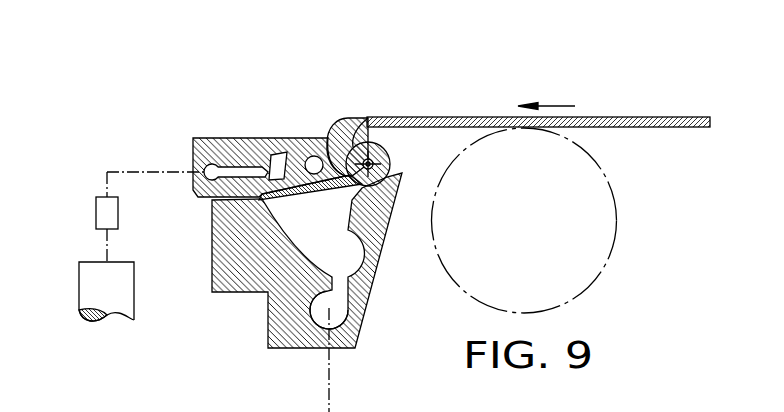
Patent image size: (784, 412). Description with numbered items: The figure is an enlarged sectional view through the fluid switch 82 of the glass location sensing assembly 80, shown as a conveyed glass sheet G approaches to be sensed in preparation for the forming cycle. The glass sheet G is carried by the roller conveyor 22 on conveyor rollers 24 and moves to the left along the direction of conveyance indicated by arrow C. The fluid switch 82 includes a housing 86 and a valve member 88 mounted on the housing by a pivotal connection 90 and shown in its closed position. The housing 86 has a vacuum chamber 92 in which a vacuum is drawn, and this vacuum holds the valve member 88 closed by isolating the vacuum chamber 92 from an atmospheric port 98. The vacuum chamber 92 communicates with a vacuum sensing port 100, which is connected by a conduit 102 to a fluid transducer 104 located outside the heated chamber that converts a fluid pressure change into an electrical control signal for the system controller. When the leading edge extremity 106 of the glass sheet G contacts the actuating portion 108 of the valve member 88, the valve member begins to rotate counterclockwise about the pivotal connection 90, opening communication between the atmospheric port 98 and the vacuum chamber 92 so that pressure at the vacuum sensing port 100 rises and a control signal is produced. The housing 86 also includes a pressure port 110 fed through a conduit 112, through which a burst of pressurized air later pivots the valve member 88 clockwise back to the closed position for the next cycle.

The roller conveyor 22 is at (79, 275).
The conveyor roller 24 is at (628, 222).
The glass location sensing assembly 80 is at (445, 46).
The fluid switch 82 is at (266, 253).
The housing 86 is at (209, 206).
The valve member 88 is at (336, 172).
The pivotal connection 90 is at (353, 147).
The vacuum chamber 92 is at (275, 154).
The atmospheric port 98 is at (314, 160).
The vacuum sensing port 100 is at (207, 164).
The conduit 102 is at (140, 172).
The fluid transducer 104 is at (95, 212).
The leading edge extremity 106 is at (381, 118).
The actuating portion 108 is at (363, 118).
The pressure port 110 is at (338, 312).
The conduit 112 is at (330, 398).
The direction of conveyance C is at (556, 106).
The glass sheet G is at (638, 117).